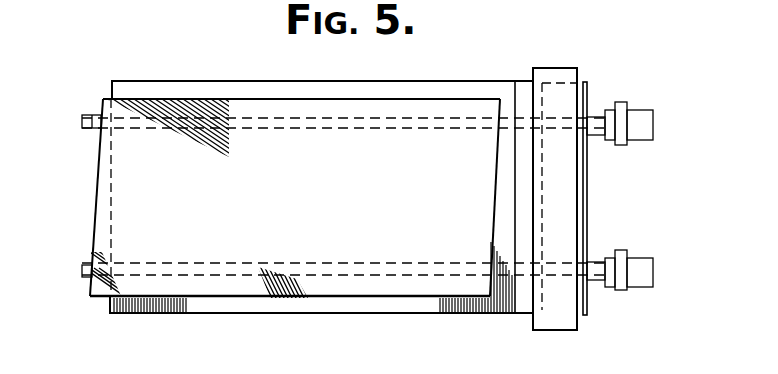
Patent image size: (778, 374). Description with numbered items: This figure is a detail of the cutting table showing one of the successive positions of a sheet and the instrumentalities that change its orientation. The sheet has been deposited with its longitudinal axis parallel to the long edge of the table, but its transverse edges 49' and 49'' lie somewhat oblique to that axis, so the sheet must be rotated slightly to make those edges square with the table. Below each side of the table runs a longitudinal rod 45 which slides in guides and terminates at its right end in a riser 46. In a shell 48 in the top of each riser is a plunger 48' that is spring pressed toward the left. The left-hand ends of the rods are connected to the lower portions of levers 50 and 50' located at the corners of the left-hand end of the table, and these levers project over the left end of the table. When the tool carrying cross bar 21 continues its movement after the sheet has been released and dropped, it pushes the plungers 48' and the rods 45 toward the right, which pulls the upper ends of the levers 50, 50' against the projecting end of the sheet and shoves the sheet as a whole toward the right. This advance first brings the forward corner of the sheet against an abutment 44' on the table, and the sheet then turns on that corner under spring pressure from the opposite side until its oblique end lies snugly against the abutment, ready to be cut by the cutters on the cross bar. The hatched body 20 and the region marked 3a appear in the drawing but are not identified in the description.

The housing 20 is at (487, 317).
The spacer plate 3a is at (197, 170).
The transverse edge 49'' is at (68, 197).
The transverse edge 49' is at (469, 206).
The longitudinal rod 45 is at (290, 133).
The abutment 44' is at (508, 179).
The tool carrying cross bar 21 is at (569, 69).
The plunger 48' is at (615, 175).
The riser 46 is at (620, 113).
The shell 48 is at (665, 193).
The lever 50' is at (83, 106).
The lever 50 is at (68, 275).